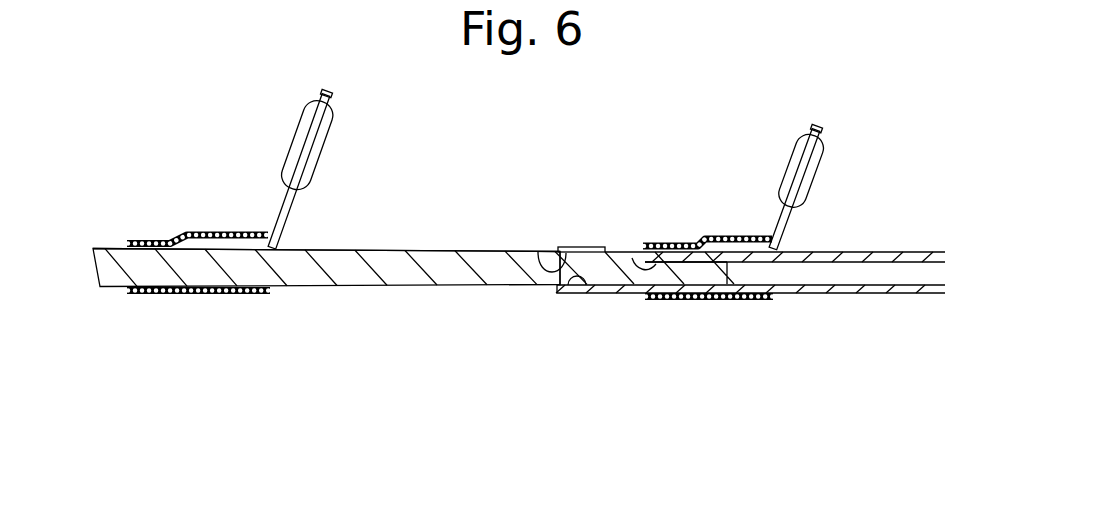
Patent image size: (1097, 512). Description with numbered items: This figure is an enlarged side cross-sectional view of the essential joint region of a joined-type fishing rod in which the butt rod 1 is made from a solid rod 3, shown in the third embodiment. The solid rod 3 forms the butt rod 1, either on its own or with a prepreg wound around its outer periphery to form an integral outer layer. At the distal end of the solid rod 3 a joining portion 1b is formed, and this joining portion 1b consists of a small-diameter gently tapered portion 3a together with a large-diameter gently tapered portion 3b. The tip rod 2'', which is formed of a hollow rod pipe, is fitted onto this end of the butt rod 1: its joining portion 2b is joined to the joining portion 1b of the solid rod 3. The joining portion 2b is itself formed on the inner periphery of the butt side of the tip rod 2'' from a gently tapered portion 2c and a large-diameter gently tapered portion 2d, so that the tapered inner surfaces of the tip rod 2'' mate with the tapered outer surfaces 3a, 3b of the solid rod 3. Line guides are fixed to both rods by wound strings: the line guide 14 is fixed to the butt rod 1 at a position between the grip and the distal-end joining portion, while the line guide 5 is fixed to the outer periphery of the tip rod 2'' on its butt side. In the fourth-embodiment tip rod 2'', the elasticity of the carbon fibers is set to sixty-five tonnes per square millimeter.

The butt rod 1 is at (372, 236).
The joining portion 1b is at (615, 291).
The tip rod 2'' is at (775, 210).
The joining portion 2b is at (561, 289).
The gently tapered portion 2c is at (632, 258).
The large-diameter gently tapered portion 2d is at (561, 270).
The solid rod 3 is at (410, 243).
The small-diameter gently tapered portion 3a is at (673, 258).
The large-diameter gently tapered portion 3b is at (579, 247).
The line guide 5 is at (798, 132).
The line guide 14 is at (300, 103).